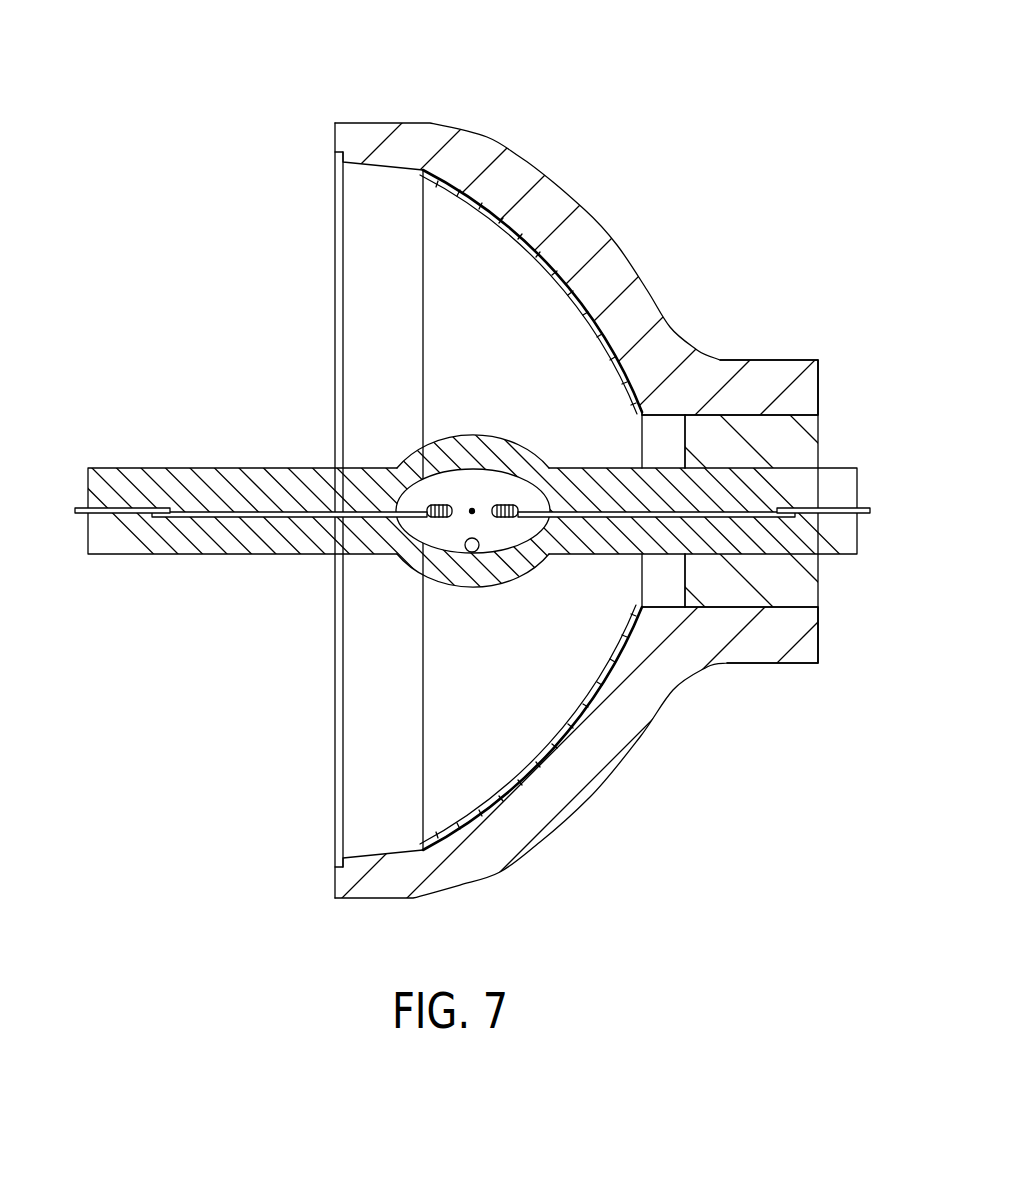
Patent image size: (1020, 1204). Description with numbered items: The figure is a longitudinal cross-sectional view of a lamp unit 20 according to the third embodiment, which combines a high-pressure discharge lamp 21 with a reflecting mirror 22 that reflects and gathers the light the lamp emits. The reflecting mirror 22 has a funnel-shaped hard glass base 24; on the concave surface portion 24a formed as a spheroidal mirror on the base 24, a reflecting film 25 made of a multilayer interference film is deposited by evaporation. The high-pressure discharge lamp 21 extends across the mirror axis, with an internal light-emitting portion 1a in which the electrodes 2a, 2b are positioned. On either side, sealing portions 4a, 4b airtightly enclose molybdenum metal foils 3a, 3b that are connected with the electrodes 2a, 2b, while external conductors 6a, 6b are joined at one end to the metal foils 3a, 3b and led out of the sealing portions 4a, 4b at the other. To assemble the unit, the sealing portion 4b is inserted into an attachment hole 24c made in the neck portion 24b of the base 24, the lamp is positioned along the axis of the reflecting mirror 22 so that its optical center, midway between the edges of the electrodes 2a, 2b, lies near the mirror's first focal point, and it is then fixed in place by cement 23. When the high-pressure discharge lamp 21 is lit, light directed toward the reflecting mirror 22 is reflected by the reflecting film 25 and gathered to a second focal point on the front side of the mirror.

The lamp unit 20 is at (281, 92).
The reflecting mirror 22 is at (660, 238).
The base 24 is at (552, 198).
The reflecting film 25 is at (476, 210).
The concave surface portion 24a is at (553, 299).
The neck portion 24b is at (789, 350).
The sealing portion 4b is at (667, 430).
The attachment hole 24c is at (654, 598).
The high-pressure discharge lamp 21 is at (436, 394).
The cement 23 is at (820, 594).
The sealing portion 4a is at (204, 443).
The light-emitting portion 1a is at (474, 508).
The electrode 2a is at (410, 520).
The electrode 2b is at (535, 517).
The metal foil 3a is at (252, 524).
The metal foil 3b is at (596, 520).
The external conductor 6a is at (74, 515).
The external conductor 6b is at (862, 517).